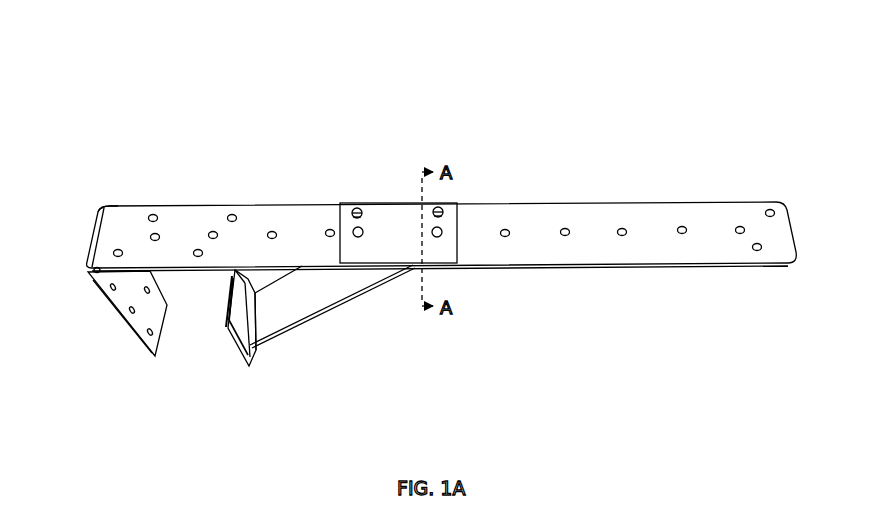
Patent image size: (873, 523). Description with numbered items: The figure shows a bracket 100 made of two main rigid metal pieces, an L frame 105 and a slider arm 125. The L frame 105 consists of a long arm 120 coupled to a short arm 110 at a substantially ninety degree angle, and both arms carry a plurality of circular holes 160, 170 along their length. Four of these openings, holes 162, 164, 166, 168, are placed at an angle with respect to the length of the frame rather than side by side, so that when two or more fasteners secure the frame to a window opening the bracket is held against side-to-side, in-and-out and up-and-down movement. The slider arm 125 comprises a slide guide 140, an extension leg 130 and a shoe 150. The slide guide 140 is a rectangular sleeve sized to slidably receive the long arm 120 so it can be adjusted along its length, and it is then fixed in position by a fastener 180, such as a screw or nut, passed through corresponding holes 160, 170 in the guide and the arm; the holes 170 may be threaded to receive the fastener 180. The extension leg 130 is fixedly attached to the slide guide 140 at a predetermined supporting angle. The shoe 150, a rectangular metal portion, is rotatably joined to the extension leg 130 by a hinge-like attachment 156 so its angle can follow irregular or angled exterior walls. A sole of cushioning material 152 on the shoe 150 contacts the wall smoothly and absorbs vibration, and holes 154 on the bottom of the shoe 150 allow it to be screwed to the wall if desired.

The bracket 100 is at (764, 86).
The L frame 105 is at (101, 197).
The short arm 110 is at (123, 325).
The long arm 120 is at (558, 201).
The slider arm 125 is at (327, 322).
The extension leg 130 is at (355, 297).
The slide guide 140 is at (398, 202).
The shoe 150 is at (230, 349).
The cushioning material 152 is at (221, 327).
The holes 154 is at (123, 376).
The hinge-like attachment 156 is at (259, 320).
The circular holes 160 is at (627, 227).
The hole 162 is at (118, 247).
The hole 164 is at (155, 213).
The hole 166 is at (198, 247).
The hole 168 is at (235, 213).
The circular holes 170 is at (446, 236).
The fastener 180 is at (430, 210).